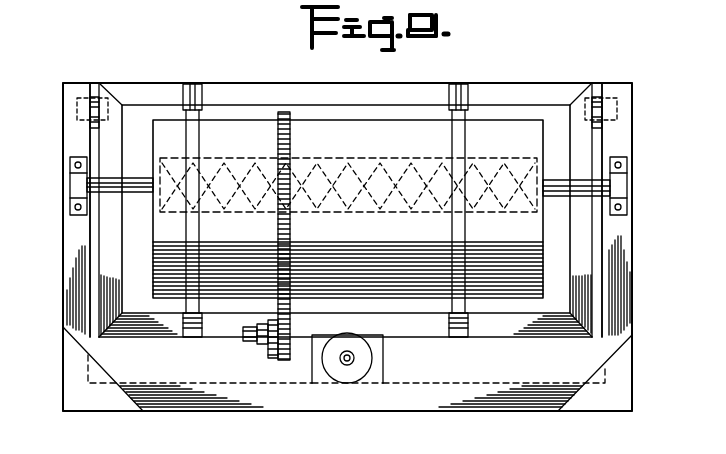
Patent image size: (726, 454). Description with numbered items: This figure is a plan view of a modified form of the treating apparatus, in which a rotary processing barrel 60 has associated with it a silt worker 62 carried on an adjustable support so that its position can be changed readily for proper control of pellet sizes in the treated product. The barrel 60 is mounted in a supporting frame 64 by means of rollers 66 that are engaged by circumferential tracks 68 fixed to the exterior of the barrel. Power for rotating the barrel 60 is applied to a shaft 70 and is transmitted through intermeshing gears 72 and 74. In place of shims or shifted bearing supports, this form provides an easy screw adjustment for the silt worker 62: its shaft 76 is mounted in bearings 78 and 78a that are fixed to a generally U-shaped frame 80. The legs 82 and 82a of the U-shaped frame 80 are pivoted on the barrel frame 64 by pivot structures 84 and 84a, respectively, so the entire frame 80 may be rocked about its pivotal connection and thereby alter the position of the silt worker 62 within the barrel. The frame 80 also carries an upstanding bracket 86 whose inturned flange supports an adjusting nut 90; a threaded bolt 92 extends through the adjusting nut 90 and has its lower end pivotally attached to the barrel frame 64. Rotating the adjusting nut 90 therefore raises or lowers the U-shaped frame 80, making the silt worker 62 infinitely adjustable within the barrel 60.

The rotary processing barrel 60 is at (500, 132).
The silt worker 62 is at (345, 160).
The supporting frame 64 is at (247, 93).
The rollers 66 is at (190, 90).
The circumferential tracks 68 is at (162, 243).
The shaft 70 is at (255, 342).
The gear 72 is at (283, 360).
The gear 74 is at (291, 234).
The shaft of the silt worker 76 is at (134, 180).
The bearing 78 is at (72, 186).
The bearing 78a is at (630, 187).
The U-shaped frame 80 is at (626, 278).
The leg of the U-shaped frame 82 is at (67, 122).
The leg of the U-shaped frame 82a is at (632, 122).
The pivot structure 84 is at (95, 90).
The pivot structure 84a is at (598, 90).
The upstanding bracket 86 is at (372, 370).
The adjusting nut 90 is at (340, 375).
The threaded bolt 92 is at (350, 365).